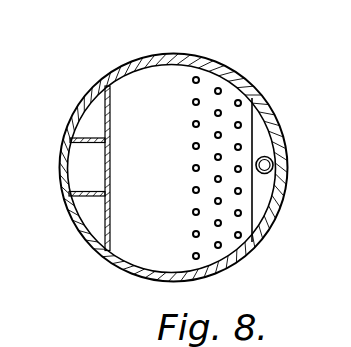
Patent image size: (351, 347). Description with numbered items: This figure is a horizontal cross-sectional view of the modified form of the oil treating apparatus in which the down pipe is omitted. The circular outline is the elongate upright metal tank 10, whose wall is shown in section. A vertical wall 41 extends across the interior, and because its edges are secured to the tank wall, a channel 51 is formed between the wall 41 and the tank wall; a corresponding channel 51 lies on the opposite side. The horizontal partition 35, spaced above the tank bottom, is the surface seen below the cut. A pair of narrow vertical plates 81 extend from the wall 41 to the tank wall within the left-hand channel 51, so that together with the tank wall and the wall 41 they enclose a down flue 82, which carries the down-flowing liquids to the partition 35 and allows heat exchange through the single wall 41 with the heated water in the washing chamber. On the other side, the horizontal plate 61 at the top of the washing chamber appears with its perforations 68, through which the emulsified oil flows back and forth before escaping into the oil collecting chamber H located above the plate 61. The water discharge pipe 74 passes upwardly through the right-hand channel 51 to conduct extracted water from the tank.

The tank 10 is at (179, 57).
The horizontal partition 35 is at (95, 108).
The wall 41 is at (111, 165).
The channel 51 is at (263, 133).
The horizontal plate 61 is at (254, 216).
The perforations 68 is at (241, 100).
The water discharge pipe 74 is at (274, 163).
The narrow vertical plates 81 is at (88, 137).
The down flue 82 is at (78, 166).
The oil collecting chamber H is at (246, 256).